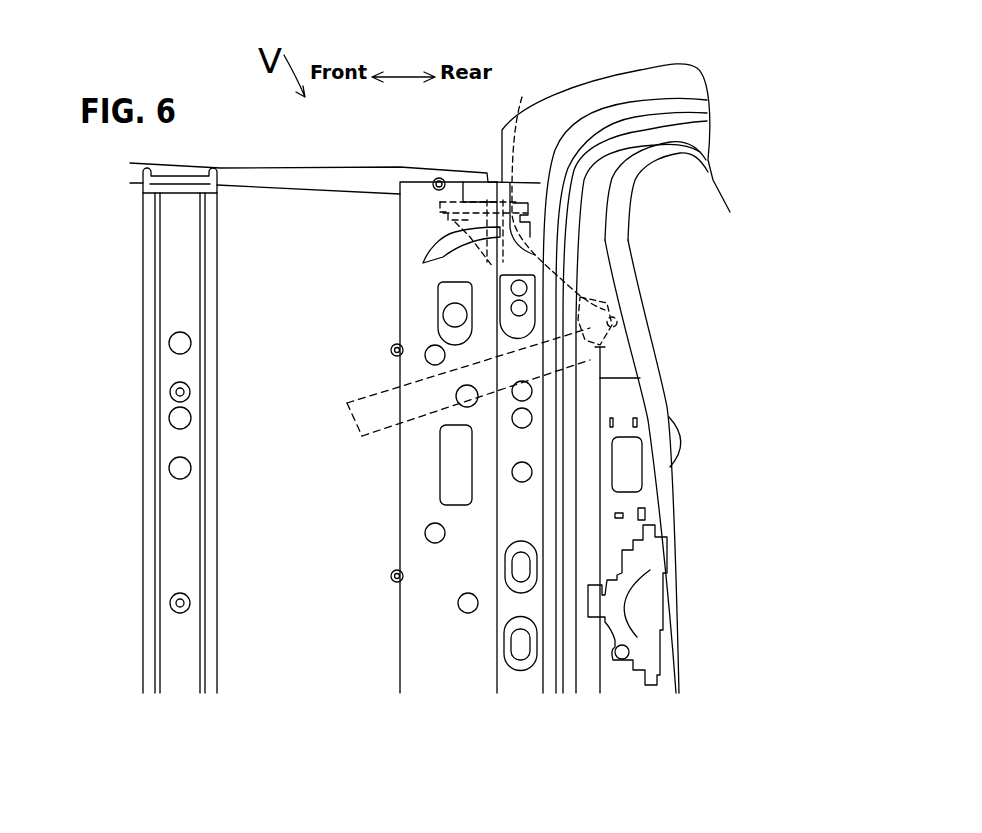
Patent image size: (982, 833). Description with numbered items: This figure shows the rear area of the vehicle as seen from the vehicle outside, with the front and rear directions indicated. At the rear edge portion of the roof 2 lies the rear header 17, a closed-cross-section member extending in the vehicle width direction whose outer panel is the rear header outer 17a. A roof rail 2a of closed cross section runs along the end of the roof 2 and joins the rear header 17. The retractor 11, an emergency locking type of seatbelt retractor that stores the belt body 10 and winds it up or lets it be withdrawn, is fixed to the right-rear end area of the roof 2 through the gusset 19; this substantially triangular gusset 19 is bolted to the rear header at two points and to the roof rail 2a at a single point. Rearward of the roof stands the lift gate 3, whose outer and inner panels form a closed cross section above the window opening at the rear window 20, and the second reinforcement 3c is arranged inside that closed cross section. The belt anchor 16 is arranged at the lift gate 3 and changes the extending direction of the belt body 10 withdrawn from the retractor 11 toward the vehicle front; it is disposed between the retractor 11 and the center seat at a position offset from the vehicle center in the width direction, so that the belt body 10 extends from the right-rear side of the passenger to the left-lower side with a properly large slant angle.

The roof 2 is at (335, 595).
The roof rail 2a is at (255, 180).
The lift gate 3 is at (606, 69).
The second reinforcement 3c is at (603, 243).
The belt body 10 is at (384, 390).
The retractor 11 is at (557, 187).
The belt anchor 16 is at (607, 303).
The rear header 17 is at (535, 685).
The rear header outer 17a is at (502, 512).
The gusset 19 is at (472, 203).
The rear window 20 is at (742, 300).